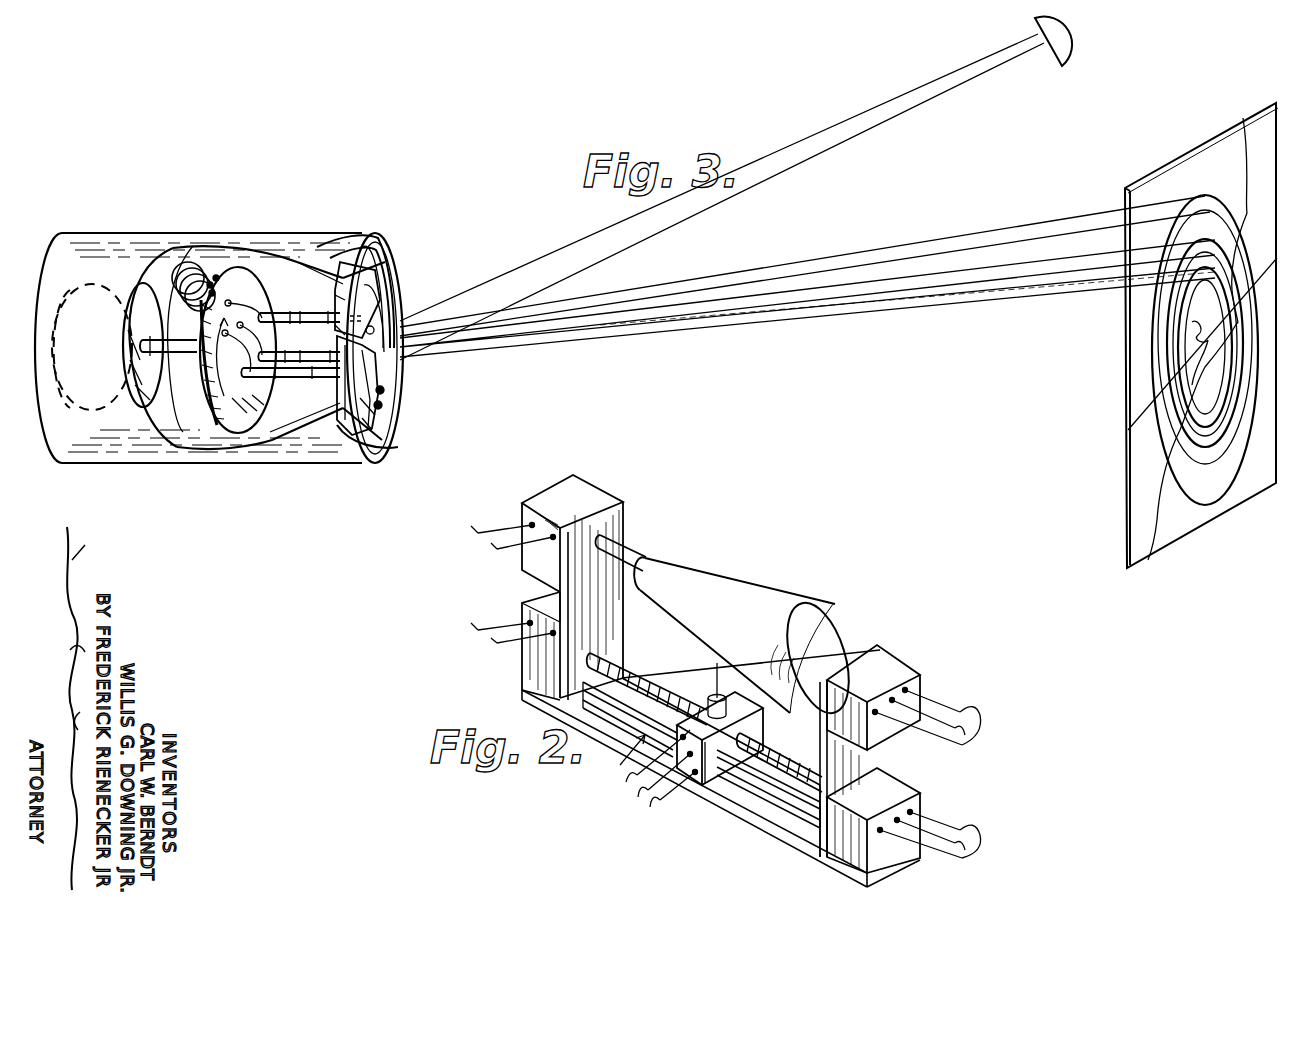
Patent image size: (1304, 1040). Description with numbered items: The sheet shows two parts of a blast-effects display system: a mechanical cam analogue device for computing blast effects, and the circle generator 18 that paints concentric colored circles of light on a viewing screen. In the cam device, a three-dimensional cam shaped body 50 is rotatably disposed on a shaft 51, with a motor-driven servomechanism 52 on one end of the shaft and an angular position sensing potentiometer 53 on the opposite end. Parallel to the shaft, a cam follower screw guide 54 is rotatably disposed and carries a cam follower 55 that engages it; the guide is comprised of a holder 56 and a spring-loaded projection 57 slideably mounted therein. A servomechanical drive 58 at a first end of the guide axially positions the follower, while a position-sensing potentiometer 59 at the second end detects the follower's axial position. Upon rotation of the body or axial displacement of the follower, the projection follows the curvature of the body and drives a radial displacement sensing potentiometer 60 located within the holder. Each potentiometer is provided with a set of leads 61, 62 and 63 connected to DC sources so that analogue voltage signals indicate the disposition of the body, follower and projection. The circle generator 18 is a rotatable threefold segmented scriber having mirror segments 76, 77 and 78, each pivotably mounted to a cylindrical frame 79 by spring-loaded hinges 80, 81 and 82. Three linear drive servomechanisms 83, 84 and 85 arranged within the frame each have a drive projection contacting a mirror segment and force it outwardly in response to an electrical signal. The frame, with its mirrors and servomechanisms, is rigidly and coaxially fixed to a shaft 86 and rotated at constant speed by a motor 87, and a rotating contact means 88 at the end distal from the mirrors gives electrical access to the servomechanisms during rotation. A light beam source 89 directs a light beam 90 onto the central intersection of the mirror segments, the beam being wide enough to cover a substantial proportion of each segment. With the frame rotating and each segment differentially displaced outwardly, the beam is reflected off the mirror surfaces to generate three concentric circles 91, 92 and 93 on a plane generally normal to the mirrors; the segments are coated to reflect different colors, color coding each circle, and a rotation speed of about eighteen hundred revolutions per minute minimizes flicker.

In FIG. 3, the circle generator 18 is at (360, 220).
In FIG. 2, the three-dimensional cam shaped body 50 is at (680, 566).
In FIG. 2, the shaft 51 is at (620, 543).
In FIG. 2, the motor-driven servomechanism 52 is at (552, 498).
In FIG. 2, the position sensing potentiometer 53 is at (882, 655).
In FIG. 2, the cam follower screw guide 54 is at (775, 750).
In FIG. 2, the cam follower 55 is at (680, 748).
In FIG. 2, the holder 56 is at (712, 780).
In FIG. 2, the spring-loaded projection 57 is at (716, 690).
In FIG. 2, the servomechanical drive 58 is at (535, 606).
In FIG. 2, the position-sensing potentiometer 59 is at (915, 795).
In FIG. 2, the radial displacement sensing potentiometer 60 is at (680, 738).
In FIG. 2, the leads 61 is at (966, 708).
In FIG. 2, the leads 62 is at (966, 824).
In FIG. 2, the leads 63 is at (640, 792).
In FIG. 3, the mirror segment 76 is at (380, 300).
In FIG. 3, the mirror segment 77 is at (352, 420).
In FIG. 3, the mirror segment 78 is at (380, 407).
In FIG. 3, the cylindrical frame 79 is at (375, 252).
In FIG. 3, the spring-loaded hinge 80 is at (372, 270).
In FIG. 3, the spring-loaded hinge 81 is at (342, 380).
In FIG. 3, the spring-loaded hinge 82 is at (385, 386).
In FIG. 3, the linear drive servomechanism 83 is at (282, 312).
In FIG. 3, the linear drive servomechanism 84 is at (288, 352).
In FIG. 3, the linear drive servomechanism 85 is at (238, 350).
In FIG. 3, the shaft 86 is at (190, 352).
In FIG. 3, the motor 87 is at (145, 375).
In FIG. 3, the rotating contact means 88 is at (190, 265).
In FIG. 3, the light beam source 89 is at (1070, 35).
In FIG. 3, the light beam 90 is at (826, 133).
In FIG. 3, the circle 91 is at (1222, 495).
In FIG. 3, the circle 92 is at (1224, 410).
In FIG. 3, the circle 93 is at (1230, 385).